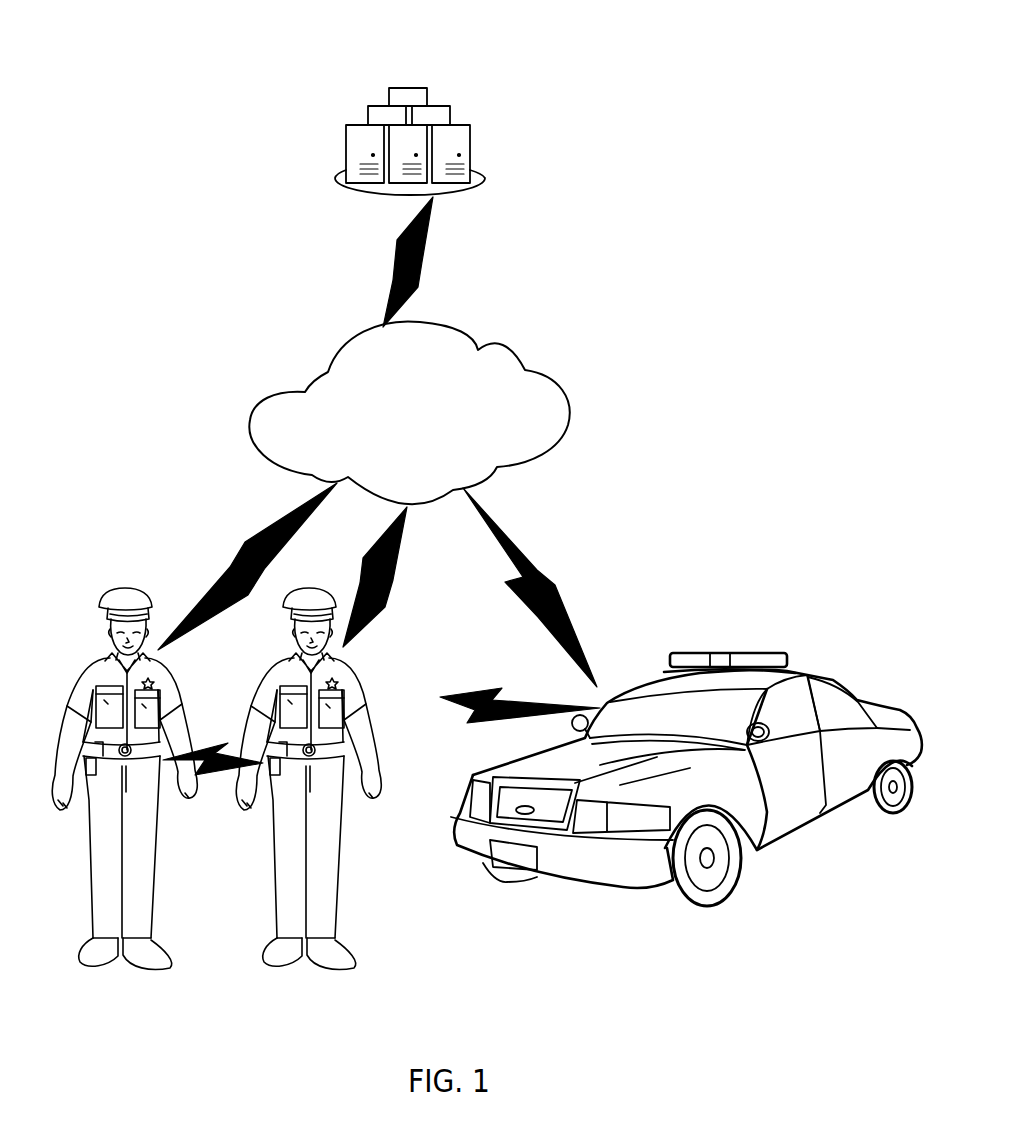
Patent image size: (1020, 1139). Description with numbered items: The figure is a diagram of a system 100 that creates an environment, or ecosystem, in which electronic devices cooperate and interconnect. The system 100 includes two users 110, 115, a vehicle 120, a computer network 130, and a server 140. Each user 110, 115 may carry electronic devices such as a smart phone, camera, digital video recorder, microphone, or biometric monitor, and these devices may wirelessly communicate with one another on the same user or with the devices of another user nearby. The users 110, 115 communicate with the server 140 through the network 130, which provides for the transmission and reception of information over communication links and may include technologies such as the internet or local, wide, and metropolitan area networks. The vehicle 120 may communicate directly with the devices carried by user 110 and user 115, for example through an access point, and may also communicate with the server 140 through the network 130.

The system 100 is at (183, 44).
The user 110 is at (127, 968).
The user 115 is at (318, 972).
The vehicle 120 is at (790, 667).
The computer network 130 is at (281, 392).
The server 140 is at (347, 137).